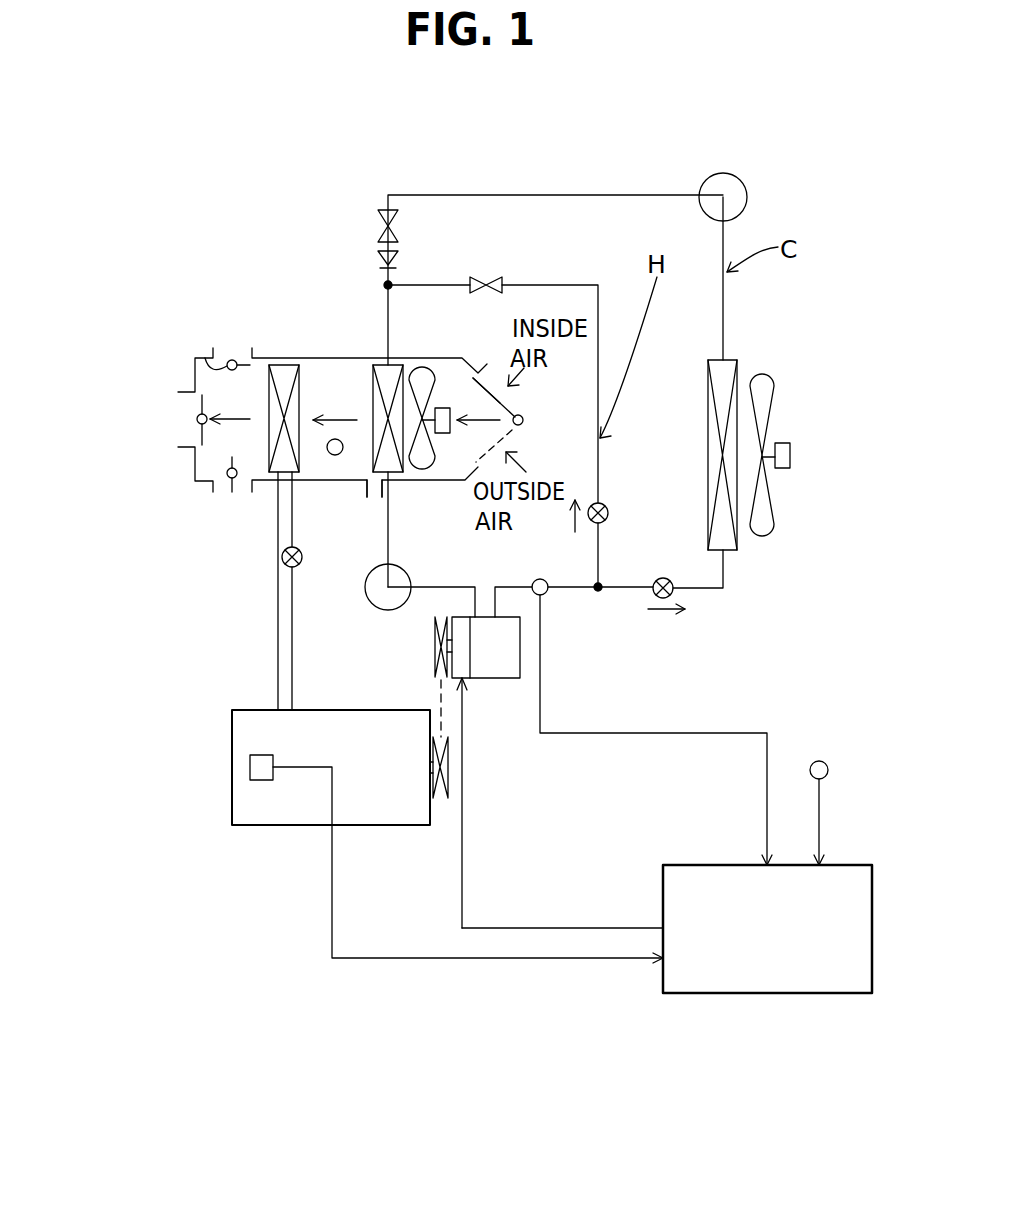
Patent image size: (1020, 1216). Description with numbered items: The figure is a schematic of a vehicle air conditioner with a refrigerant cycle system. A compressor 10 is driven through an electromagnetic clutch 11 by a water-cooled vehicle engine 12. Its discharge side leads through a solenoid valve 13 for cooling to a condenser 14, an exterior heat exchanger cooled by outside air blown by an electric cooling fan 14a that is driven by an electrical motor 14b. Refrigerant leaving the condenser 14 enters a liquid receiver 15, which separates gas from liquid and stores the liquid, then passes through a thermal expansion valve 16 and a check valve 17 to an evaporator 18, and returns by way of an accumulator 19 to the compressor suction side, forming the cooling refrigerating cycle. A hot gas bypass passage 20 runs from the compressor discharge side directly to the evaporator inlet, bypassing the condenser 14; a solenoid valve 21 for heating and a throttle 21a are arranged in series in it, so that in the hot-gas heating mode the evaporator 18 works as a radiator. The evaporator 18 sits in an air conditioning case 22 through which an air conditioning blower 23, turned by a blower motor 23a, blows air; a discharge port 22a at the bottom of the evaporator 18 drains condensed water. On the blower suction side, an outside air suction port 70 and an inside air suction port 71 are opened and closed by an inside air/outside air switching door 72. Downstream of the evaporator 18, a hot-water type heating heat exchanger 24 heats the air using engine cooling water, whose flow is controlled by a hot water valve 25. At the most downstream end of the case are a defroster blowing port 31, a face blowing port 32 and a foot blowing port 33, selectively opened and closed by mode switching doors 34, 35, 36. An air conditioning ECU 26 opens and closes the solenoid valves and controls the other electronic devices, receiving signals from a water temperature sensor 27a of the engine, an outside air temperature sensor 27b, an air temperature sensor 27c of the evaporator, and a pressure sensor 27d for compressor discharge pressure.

The compressor 10 is at (502, 678).
The electromagnetic clutch 11 is at (435, 655).
The vehicle engine 12 is at (283, 818).
The solenoid valve for cooling 13 is at (670, 578).
The condenser 14 is at (705, 400).
The electric cooling fan 14a is at (760, 374).
The electrical motor 14b is at (780, 468).
The liquid receiver 15 is at (730, 174).
The thermal expansion valve 16 is at (378, 223).
The check valve 17 is at (378, 260).
The evaporator 18 is at (382, 372).
The accumulator 19 is at (407, 572).
The hot gas bypass passage 20 is at (547, 284).
The solenoid valve for heating 21 is at (607, 505).
The throttle 21a is at (480, 278).
The air conditioning case 22 is at (276, 357).
The discharge port 22a is at (376, 497).
The air conditioning blower 23 is at (424, 367).
The blower motor 23a is at (443, 408).
The heating heat exchanger 24 is at (300, 450).
The hot water valve 25 is at (282, 560).
The air conditioning electronic control unit 26 is at (663, 982).
The water temperature sensor 27a is at (255, 768).
The outside air temperature sensor 27b is at (822, 760).
The air temperature sensor 27c is at (335, 456).
The pressure sensor 27d is at (545, 596).
The defroster blowing port 31 is at (222, 350).
The face blowing port 32 is at (196, 418).
The foot blowing port 33 is at (226, 489).
The mode switching door 34 is at (220, 360).
The mode switching door 35 is at (198, 430).
The mode switching door 36 is at (224, 466).
The outside air suction port 70 is at (513, 445).
The inside air suction port 71 is at (508, 387).
The inside air/outside air switching door 72 is at (526, 426).